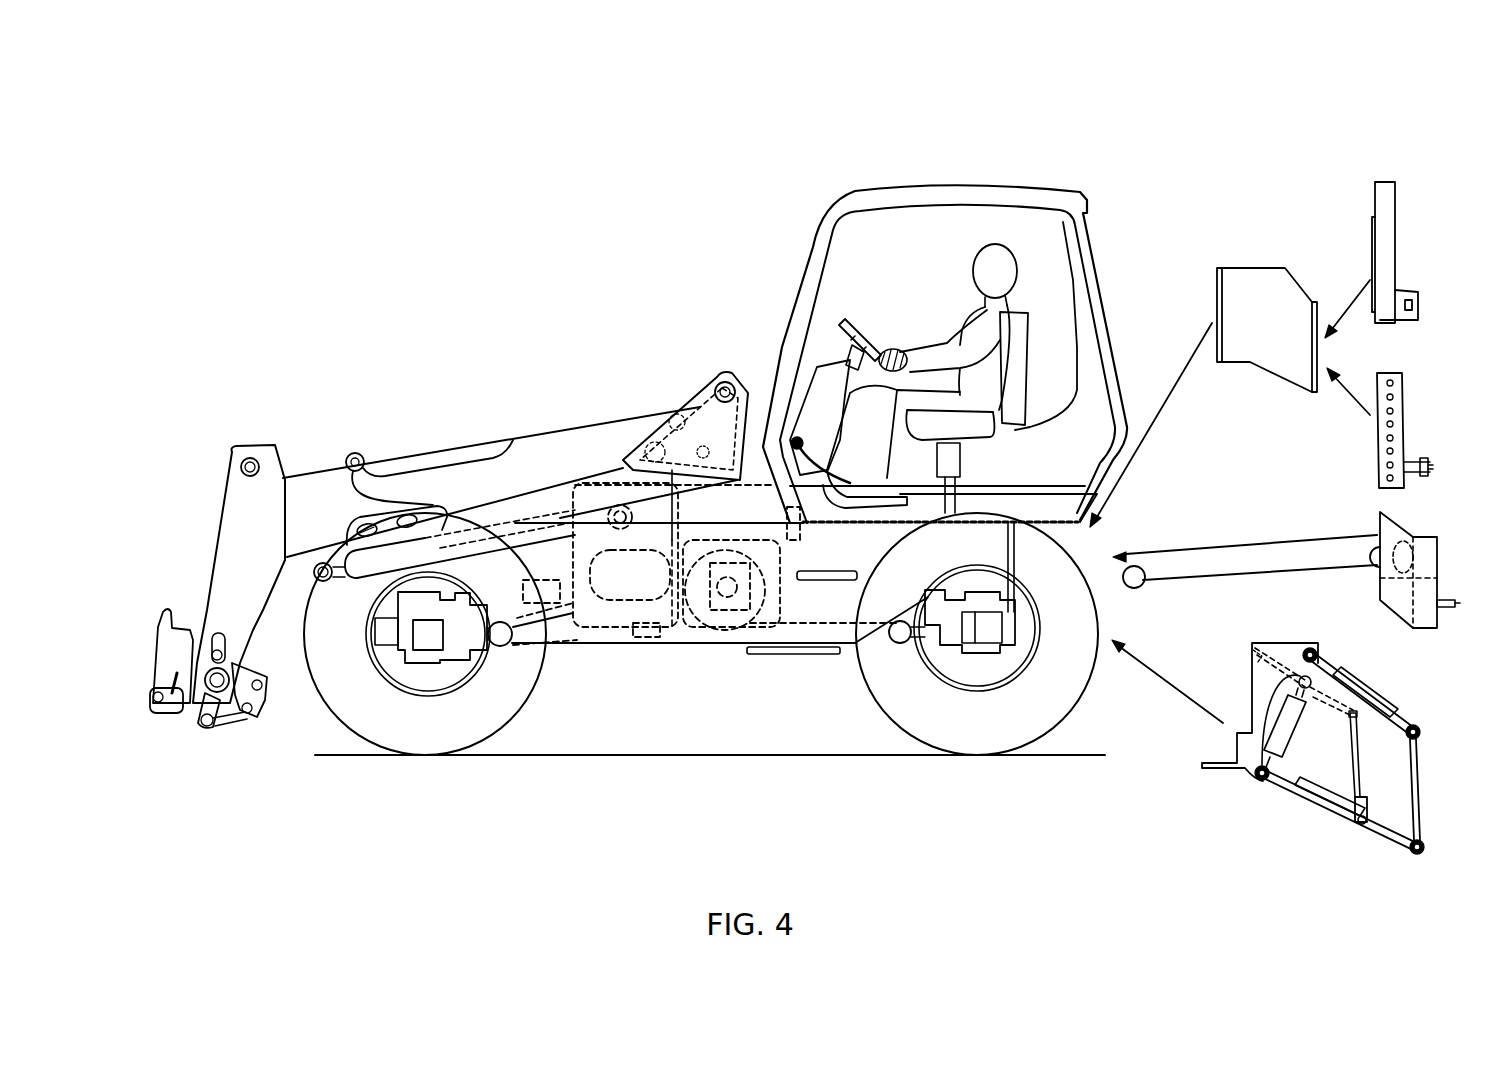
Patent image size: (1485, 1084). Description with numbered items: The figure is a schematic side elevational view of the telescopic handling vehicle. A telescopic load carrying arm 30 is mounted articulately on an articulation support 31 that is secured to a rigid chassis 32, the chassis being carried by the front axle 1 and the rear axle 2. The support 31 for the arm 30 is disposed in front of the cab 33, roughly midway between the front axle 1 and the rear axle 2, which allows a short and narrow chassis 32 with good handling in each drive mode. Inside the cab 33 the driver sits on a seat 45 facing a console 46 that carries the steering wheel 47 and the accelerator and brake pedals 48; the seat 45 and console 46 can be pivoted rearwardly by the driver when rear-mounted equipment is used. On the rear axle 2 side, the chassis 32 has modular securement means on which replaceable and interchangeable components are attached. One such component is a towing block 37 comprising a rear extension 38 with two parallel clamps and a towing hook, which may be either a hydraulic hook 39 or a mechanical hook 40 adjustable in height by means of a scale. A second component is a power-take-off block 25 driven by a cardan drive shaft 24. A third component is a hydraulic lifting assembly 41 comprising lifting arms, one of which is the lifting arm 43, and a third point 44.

The front axle 1 is at (425, 765).
The rear axle 2 is at (960, 765).
The drive shaft 24 is at (1226, 545).
The power-take-off block 25 is at (1424, 652).
The telescopic load carrying arm 30 is at (407, 440).
The articulation support 31 is at (700, 410).
The rigid chassis 32 is at (553, 640).
The cab 33 is at (820, 200).
The towing block 37 is at (1430, 342).
The rear extension 38 is at (1234, 255).
The hydraulic hook 39 is at (1355, 216).
The mechanical hook 40 is at (1360, 455).
The hydraulic lifting assembly 41 is at (1285, 805).
The lifting arm 43 is at (1373, 842).
The third point 44 is at (1350, 685).
The seat 45 is at (1058, 225).
The console 46 is at (785, 375).
The steering wheel 47 is at (848, 322).
The accelerator and brake pedals 48 is at (908, 362).